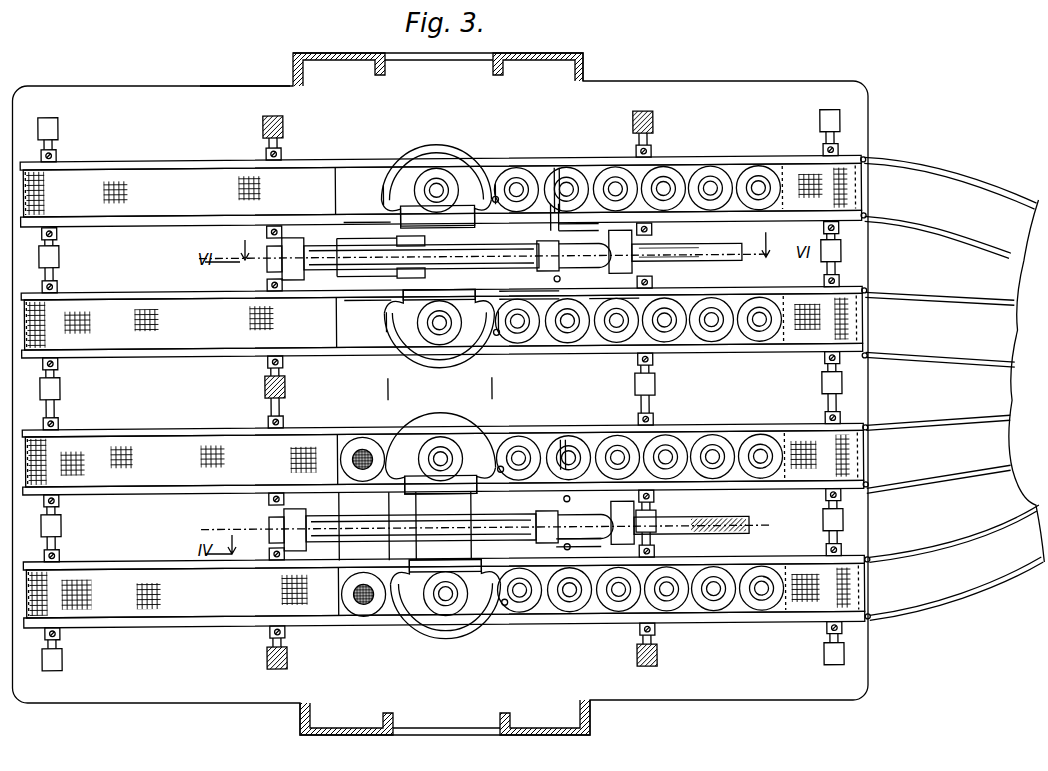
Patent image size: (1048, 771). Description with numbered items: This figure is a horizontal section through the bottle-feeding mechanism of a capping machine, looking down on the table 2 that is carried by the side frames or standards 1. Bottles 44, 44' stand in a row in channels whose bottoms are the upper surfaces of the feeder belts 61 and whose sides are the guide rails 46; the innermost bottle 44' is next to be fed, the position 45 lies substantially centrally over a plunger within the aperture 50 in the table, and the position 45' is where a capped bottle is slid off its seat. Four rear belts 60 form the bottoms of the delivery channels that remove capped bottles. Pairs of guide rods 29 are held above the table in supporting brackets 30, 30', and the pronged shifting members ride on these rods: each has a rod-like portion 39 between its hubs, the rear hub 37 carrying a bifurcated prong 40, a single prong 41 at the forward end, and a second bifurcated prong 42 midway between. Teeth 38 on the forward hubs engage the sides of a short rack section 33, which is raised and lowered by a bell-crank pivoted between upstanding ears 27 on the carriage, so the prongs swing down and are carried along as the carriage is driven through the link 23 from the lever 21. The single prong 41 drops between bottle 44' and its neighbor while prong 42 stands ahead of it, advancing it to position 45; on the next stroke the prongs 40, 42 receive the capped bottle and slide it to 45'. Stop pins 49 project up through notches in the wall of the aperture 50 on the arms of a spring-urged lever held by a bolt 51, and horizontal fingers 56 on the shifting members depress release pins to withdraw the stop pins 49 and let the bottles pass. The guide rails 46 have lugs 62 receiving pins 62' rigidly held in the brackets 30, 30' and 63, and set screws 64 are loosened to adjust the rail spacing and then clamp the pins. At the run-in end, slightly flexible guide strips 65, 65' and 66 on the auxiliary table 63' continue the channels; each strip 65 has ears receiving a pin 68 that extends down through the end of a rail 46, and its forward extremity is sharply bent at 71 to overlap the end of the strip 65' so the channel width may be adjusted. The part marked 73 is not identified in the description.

The side frames or standards 1 is at (578, 60).
The table 2 is at (232, 88).
The lever 21 is at (700, 519).
The link 23 is at (738, 258).
The upstanding ears 27 is at (625, 325).
The guide rods 29 is at (333, 228).
The supporting bracket 30 is at (267, 394).
The supporting bracket 30' is at (656, 389).
The short rack section 33 is at (485, 398).
The rear hub 37 is at (390, 222).
The teeth 38 is at (572, 200).
The rod-like portion 39 is at (322, 575).
The bifurcated prong 40 is at (383, 190).
The single prong 41 is at (556, 215).
The second bifurcated prong 42 is at (465, 190).
The bottles 44 is at (663, 420).
The innermost bottle 44' is at (526, 410).
The bottle on plunger 45 is at (391, 378).
The discharged bottle position 45' is at (362, 509).
The guide rails 46 is at (172, 163).
The stud or pin 49 is at (497, 196).
The aperture 50 is at (440, 388).
The bolt 51 is at (568, 455).
The fingers 56 is at (558, 240).
The feeder belts 60 is at (443, 390).
The feeder belts 61 is at (845, 305).
The supporting lugs 62 is at (489, 390).
The pins 62' is at (444, 337).
The brackets 63 is at (474, 384).
The auxiliary table 63' is at (886, 520).
The set screws 64 is at (284, 156).
The guide strips 65 is at (955, 381).
The guide strips 65' is at (940, 440).
The guide strips 66 is at (975, 170).
The pin 68 is at (870, 356).
The bent extremities 71 is at (562, 225).
The bracket 73 is at (438, 402).